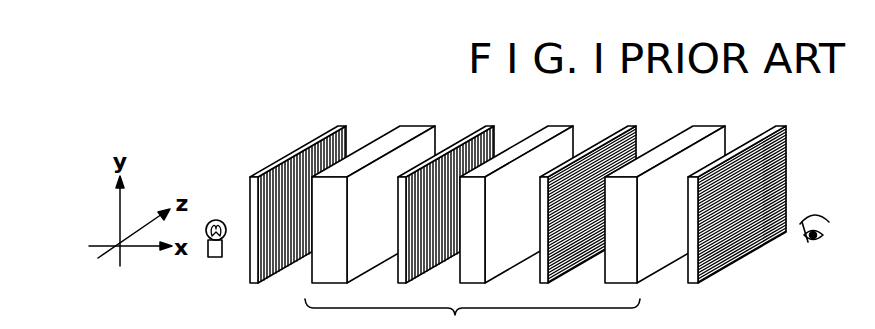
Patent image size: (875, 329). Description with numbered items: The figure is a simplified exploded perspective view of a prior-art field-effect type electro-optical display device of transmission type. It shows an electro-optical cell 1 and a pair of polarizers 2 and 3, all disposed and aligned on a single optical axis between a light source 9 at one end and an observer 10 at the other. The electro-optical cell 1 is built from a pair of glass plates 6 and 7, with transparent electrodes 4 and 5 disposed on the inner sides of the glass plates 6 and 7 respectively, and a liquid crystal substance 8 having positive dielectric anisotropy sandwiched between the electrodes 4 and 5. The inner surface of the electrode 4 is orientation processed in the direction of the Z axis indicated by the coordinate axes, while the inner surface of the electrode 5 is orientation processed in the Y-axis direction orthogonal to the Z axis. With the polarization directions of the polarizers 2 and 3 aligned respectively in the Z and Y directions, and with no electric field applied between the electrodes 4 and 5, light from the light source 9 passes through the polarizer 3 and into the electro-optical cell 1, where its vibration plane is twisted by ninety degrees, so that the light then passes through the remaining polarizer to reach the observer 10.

The electro-optical cell 1 is at (472, 314).
The polarizer 2 is at (783, 126).
The polarizer 3 is at (343, 126).
The transparent electrode 4 is at (634, 126).
The transparent electrode 5 is at (491, 126).
The glass plate 6 is at (710, 126).
The glass plate 7 is at (415, 126).
The liquid crystal substance 8 is at (562, 126).
The light source 9 is at (215, 219).
The observer 10 is at (815, 245).